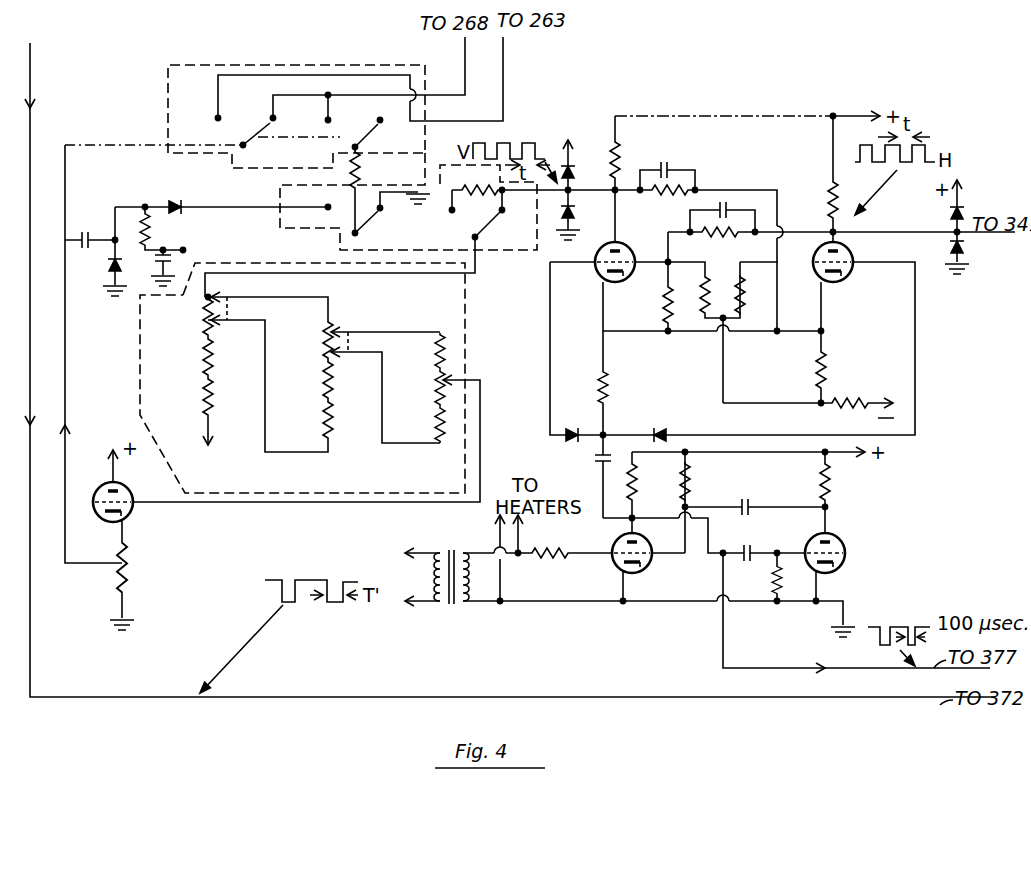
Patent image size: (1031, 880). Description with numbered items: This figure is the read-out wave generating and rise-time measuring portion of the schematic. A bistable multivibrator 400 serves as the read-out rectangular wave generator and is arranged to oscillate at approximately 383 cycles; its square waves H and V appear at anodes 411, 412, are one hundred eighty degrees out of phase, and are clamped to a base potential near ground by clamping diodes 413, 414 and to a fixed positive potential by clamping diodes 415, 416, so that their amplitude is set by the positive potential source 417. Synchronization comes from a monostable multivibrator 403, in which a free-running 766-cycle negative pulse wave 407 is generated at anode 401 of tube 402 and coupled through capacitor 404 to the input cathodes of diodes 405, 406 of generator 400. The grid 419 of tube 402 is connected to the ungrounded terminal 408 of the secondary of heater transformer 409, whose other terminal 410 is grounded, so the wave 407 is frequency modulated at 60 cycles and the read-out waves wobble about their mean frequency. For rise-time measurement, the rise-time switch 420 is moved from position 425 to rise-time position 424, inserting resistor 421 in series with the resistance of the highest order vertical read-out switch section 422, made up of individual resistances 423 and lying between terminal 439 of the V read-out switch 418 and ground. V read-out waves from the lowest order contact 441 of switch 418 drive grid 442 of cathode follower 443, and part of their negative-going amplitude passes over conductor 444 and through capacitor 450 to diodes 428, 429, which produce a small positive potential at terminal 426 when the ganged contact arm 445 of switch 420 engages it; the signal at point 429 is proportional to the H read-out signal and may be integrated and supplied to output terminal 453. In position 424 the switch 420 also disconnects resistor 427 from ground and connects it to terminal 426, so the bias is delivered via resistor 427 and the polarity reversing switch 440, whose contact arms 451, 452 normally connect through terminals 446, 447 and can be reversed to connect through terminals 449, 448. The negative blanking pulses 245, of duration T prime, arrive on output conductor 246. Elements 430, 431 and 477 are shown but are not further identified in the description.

The output conductor 246 is at (510, 366).
The switch terminal 449 is at (216, 118).
The switch terminal 447 is at (272, 118).
The switch terminal 448 is at (325, 121).
The switch terminal 446 is at (378, 121).
The contact arm 451 is at (252, 134).
The contact arm 452 is at (368, 136).
The polarity reversing switch 440 is at (408, 197).
The resistor 427 is at (363, 180).
The diode 428 is at (180, 205).
The switch terminal 426 is at (328, 206).
The capacitor 450 is at (98, 225).
The output terminal 453 is at (184, 250).
The diode 429 is at (110, 258).
The ganged contact arm 445 is at (366, 232).
The resistor 421 is at (485, 186).
The rise-time position 424 is at (455, 210).
The switch position 425 is at (500, 214).
The rise-time switch 420 is at (537, 258).
The V read-out switch 418 is at (397, 300).
The input terminal 439 is at (202, 300).
The potentiometer 431 is at (203, 387).
The highest order vertical read-out switch section 422 is at (257, 387).
The wiper contact 430 is at (202, 398).
The individual resistances 423 is at (202, 414).
The lowest order contact 441 is at (458, 383).
The grid 442 is at (122, 496).
The cathode follower 443 is at (132, 514).
The conductor 444 is at (96, 574).
The blanking pulse 245 is at (306, 583).
The 60-cycle supply 60 is at (417, 600).
The heater transformer 409 is at (466, 632).
The secondary terminal 410 is at (501, 602).
The ungrounded secondary terminal 408 is at (540, 558).
The anode 401 is at (622, 544).
The tube 402 is at (620, 563).
The grid 419 is at (673, 565).
The monostable multivibrator 403 is at (771, 479).
The 766-cycle frequency 766 is at (794, 533).
The capacitor 404 is at (596, 456).
The diode 405 is at (585, 425).
The diode 406 is at (666, 433).
The bistable multivibrator 400 is at (791, 383).
The anode 412 is at (637, 242).
The anode 411 is at (847, 258).
The 383-cycle frequency 383 is at (767, 134).
The positive potential source 417 is at (590, 140).
The clamping diode 416 is at (573, 176).
The clamping diode 414 is at (573, 222).
The clamping diode 415 is at (953, 215).
The clamping diode 413 is at (951, 247).
The negative pulse wave 407 is at (902, 628).
The output line 477 is at (837, 674).